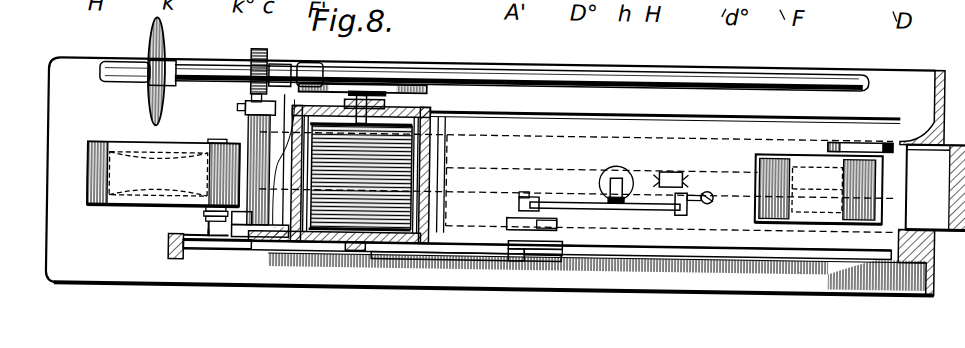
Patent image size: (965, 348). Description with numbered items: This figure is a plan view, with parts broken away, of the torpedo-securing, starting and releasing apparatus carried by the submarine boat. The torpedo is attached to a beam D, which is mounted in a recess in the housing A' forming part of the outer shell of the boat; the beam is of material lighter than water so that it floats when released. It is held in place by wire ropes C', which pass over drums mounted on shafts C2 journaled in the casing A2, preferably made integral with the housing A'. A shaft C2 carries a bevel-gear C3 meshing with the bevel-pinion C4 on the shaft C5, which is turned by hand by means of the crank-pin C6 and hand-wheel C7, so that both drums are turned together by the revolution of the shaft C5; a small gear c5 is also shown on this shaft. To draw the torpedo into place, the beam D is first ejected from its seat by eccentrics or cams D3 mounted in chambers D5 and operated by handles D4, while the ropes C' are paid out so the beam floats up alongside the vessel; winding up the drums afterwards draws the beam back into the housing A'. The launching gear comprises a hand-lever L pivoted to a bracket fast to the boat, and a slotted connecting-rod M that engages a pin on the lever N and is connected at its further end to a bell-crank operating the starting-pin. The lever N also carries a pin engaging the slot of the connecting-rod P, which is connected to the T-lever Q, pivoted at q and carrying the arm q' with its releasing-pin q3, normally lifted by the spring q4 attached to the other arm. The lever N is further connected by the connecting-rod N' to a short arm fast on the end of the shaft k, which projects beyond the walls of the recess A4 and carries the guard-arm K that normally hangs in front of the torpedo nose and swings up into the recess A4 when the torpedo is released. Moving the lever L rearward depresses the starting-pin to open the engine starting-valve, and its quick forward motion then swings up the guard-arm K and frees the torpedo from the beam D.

The shaft C5 is at (194, 62).
The crank-pin C6 is at (112, 80).
The hand-wheel C7 is at (151, 42).
The gear wheel c5 is at (266, 56).
The bevel-pinion C4 is at (302, 60).
The bevel-gear C3 is at (356, 75).
The shaft C2 is at (381, 102).
The wire ropes C' is at (385, 174).
The housing A' is at (578, 182).
The recess A4 is at (115, 200).
The casing A2 is at (314, 243).
The shaft k is at (208, 217).
The guard-arm K is at (172, 243).
The hand-lever L is at (260, 210).
The connecting-rod M is at (254, 241).
The lever N is at (514, 212).
The connecting-rod N' is at (465, 283).
The connecting-rod P is at (617, 198).
The T-lever Q is at (693, 195).
The pivot q is at (691, 171).
The arm q' is at (661, 166).
The releasing-pin q3 is at (619, 171).
The spring q4 is at (715, 179).
The beam D is at (935, 188).
The eccentrics or cams D3 is at (802, 153).
The handles D4 is at (870, 129).
The chambers D5 is at (772, 145).